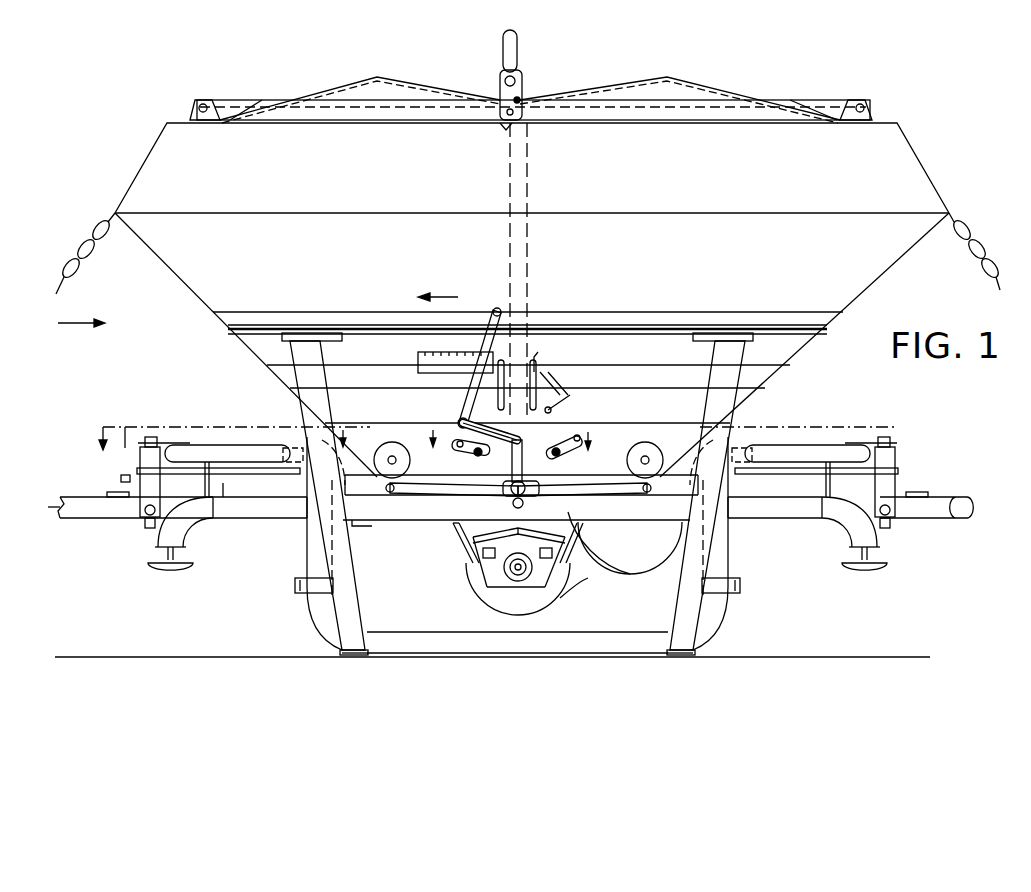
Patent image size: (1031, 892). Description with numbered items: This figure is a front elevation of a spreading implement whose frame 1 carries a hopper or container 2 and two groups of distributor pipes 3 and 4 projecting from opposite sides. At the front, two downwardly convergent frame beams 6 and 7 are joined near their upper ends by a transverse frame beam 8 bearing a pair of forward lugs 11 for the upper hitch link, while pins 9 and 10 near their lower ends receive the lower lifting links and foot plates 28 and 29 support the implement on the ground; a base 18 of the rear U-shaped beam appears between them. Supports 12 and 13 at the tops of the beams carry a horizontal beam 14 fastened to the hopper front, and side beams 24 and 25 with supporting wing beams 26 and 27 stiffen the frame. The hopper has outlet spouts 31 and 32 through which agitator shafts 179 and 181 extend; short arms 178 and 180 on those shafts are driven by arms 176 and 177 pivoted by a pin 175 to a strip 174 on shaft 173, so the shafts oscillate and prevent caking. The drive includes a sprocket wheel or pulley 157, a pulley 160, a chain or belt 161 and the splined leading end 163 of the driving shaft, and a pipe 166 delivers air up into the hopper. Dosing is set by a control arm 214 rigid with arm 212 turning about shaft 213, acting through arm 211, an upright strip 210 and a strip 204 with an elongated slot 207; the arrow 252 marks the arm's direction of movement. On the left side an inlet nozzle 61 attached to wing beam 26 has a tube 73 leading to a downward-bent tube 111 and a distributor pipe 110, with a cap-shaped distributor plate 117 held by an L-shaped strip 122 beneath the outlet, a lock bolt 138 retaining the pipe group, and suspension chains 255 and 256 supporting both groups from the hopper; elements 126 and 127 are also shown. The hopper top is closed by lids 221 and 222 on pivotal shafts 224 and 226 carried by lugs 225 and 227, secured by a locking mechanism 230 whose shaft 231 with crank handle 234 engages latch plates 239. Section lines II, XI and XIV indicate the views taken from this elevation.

The frame 1 is at (288, 374).
The hopper or container 2 is at (162, 145).
The distributor pipe group 3 is at (58, 504).
The distributor pipe group 4 is at (958, 494).
The frame beam 6 is at (345, 604).
The frame beam 7 is at (690, 600).
The transverse frame beam 8 is at (602, 388).
The pin 9 is at (296, 584).
The pin 10 is at (742, 585).
The lugs 11 is at (540, 356).
The support 12 is at (326, 348).
The support 13 is at (748, 347).
The horizontal beam 14 is at (578, 330).
The base 18 is at (516, 650).
The side beam 24 is at (742, 446).
The side beam 25 is at (302, 445).
The supporting wing beam 26 is at (228, 446).
The supporting wing beam 27 is at (792, 456).
The foot plate 28 is at (352, 657).
The foot plate 29 is at (672, 657).
The outlet spout 31 is at (386, 411).
The outlet spout 32 is at (670, 416).
The inlet nozzle 61 is at (370, 526).
The tube 73 is at (250, 520).
The distributor pipe 110 is at (78, 522).
The tube 111 is at (160, 535).
The distributor plate 117 is at (172, 568).
The L-shaped strip 122 is at (176, 555).
The bracket 126 is at (140, 524).
The clamp 127 is at (128, 446).
The lock bolt 138 is at (232, 478).
The sprocket wheel or pulley 157 is at (626, 580).
The sprocket wheel or pulley 160 is at (470, 590).
The transmission chain or belt 161 is at (594, 593).
The leading end of driving shaft 163 is at (516, 582).
The pipe 166 is at (508, 190).
The shaft 173 is at (519, 548).
The strip 174 is at (543, 521).
The pin 175 is at (577, 490).
The driving arm 176 is at (453, 523).
The driving arm 177 is at (591, 542).
The short arm 178 is at (396, 516).
The agitator shaft 179 is at (398, 452).
The short arm 180 is at (630, 548).
The agitator shaft 181 is at (656, 452).
The strip 204 is at (507, 452).
The elongated slot 207 is at (452, 488).
The upright supporting strip 210 is at (569, 381).
The arm 211 is at (556, 405).
The arm 212 is at (524, 360).
The shaft 213 is at (455, 420).
The control arm 214 is at (472, 320).
The lid 221 is at (352, 92).
The lid 222 is at (644, 90).
The pivotal shaft 224 is at (206, 106).
The lugs 225 is at (192, 108).
The pivotal shaft 226 is at (858, 104).
The lugs 227 is at (872, 116).
The locking mechanism 230 is at (497, 74).
The shaft 231 is at (520, 94).
The crank handle 234 is at (504, 50).
The latch plates 239 is at (498, 127).
The arrow 252 is at (448, 293).
The suspension chain 255 is at (74, 262).
The suspension chain 256 is at (990, 266).
The section arrow II is at (81, 312).
The section arrow XI is at (218, 441).
The section arrow XIV is at (521, 425).